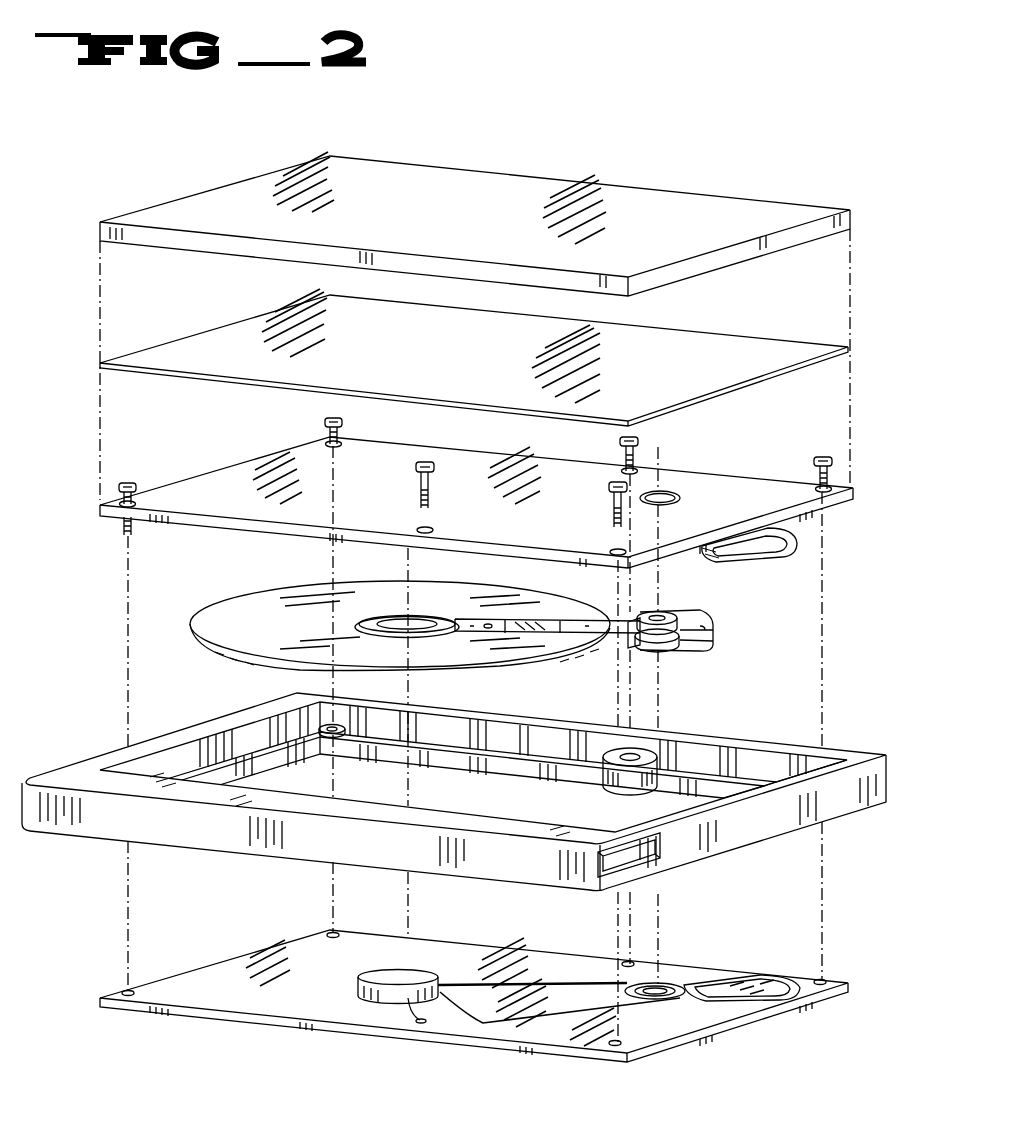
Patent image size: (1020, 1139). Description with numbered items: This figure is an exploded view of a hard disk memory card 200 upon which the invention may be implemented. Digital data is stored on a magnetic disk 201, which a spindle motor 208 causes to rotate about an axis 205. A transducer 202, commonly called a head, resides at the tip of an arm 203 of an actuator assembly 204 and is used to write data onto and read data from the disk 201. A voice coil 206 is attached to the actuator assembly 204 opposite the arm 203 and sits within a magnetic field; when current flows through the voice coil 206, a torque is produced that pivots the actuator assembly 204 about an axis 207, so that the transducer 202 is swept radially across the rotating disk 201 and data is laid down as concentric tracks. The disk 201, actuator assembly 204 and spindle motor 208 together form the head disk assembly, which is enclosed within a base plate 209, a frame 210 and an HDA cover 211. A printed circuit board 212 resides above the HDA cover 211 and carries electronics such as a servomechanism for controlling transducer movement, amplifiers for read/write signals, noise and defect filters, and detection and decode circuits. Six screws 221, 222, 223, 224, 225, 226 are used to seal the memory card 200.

The hard disk memory card 200 is at (566, 126).
The magnetic disk 201 is at (482, 595).
The transducer 202 is at (385, 614).
The arm 203 is at (545, 620).
The actuator assembly 204 is at (690, 648).
The axis 205 is at (404, 557).
The voice coil 206 is at (752, 557).
The axis 207 is at (662, 614).
The spindle motor 208 is at (370, 972).
The base plate 209 is at (300, 1031).
The frame 210 is at (740, 833).
The HDA cover 211 is at (190, 492).
The printed circuit board 212 is at (177, 379).
The screw 221 is at (325, 420).
The screw 222 is at (637, 441).
The screw 223 is at (828, 448).
The screw 224 is at (615, 480).
The screw 225 is at (437, 470).
The screw 226 is at (146, 458).